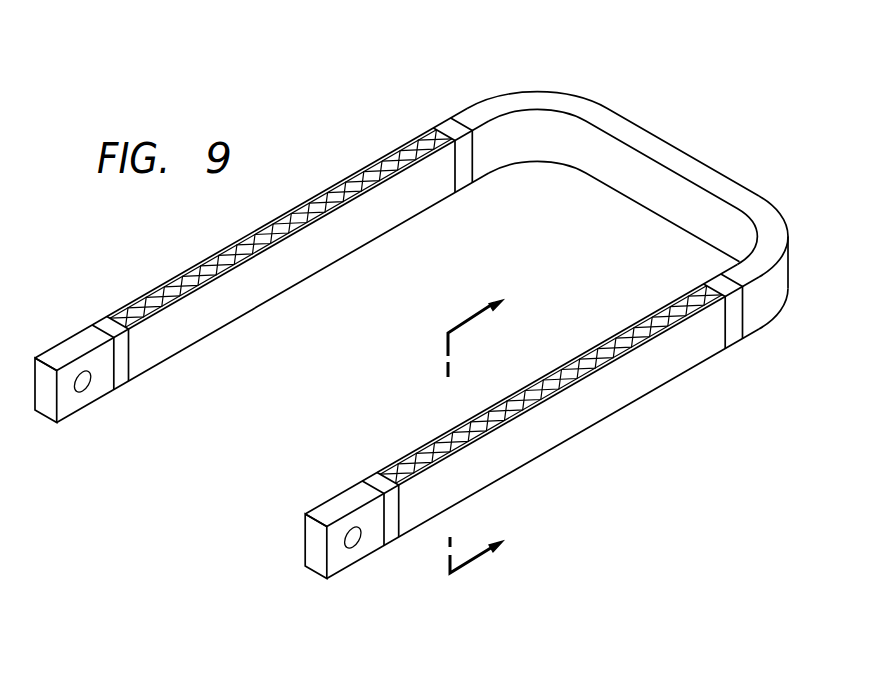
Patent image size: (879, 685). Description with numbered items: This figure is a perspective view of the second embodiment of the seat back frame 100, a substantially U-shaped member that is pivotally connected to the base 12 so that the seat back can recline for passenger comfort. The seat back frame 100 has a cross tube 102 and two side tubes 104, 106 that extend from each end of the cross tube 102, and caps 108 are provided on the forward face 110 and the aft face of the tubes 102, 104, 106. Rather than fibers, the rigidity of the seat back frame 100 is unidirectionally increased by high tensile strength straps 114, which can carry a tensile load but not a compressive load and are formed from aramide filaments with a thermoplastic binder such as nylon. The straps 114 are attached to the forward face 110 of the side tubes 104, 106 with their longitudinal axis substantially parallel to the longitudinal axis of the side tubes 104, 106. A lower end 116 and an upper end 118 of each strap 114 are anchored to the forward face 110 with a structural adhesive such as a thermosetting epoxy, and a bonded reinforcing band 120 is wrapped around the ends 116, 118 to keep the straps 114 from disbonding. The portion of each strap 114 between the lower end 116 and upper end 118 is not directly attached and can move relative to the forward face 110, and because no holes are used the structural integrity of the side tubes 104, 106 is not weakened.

The seat back frame 100 is at (699, 101).
The cross tube 102 is at (738, 178).
The side tube 104 is at (527, 437).
The side tube 106 is at (233, 242).
The caps 108 is at (586, 106).
The forward face 110 is at (641, 128).
The high tensile strength straps 114 is at (296, 226).
The lower end 116 is at (138, 306).
The upper end 118 is at (428, 142).
The bonded reinforcing band 120 is at (118, 392).
The base 12 is at (479, 439).